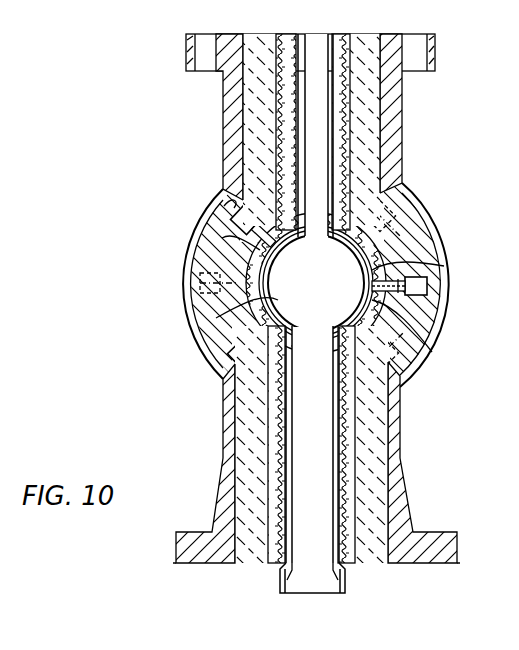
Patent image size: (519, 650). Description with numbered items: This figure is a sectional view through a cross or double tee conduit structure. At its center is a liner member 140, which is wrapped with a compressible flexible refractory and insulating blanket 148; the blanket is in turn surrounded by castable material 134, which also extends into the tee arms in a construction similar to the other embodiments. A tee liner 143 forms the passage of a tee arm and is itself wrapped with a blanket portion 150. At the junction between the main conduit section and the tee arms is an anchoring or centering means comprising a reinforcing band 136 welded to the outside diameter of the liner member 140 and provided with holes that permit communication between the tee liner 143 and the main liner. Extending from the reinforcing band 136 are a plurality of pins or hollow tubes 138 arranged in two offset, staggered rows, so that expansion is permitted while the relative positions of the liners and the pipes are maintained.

The castable material 134 is at (427, 358).
The reinforcing band 136 is at (200, 280).
The pins or hollow tubes 138 is at (230, 353).
The liner member 140 is at (364, 277).
The tee liner 143 is at (327, 62).
The compressible flexible refractory and insulating blanket 148 is at (443, 312).
The blanket portion 150 is at (352, 421).